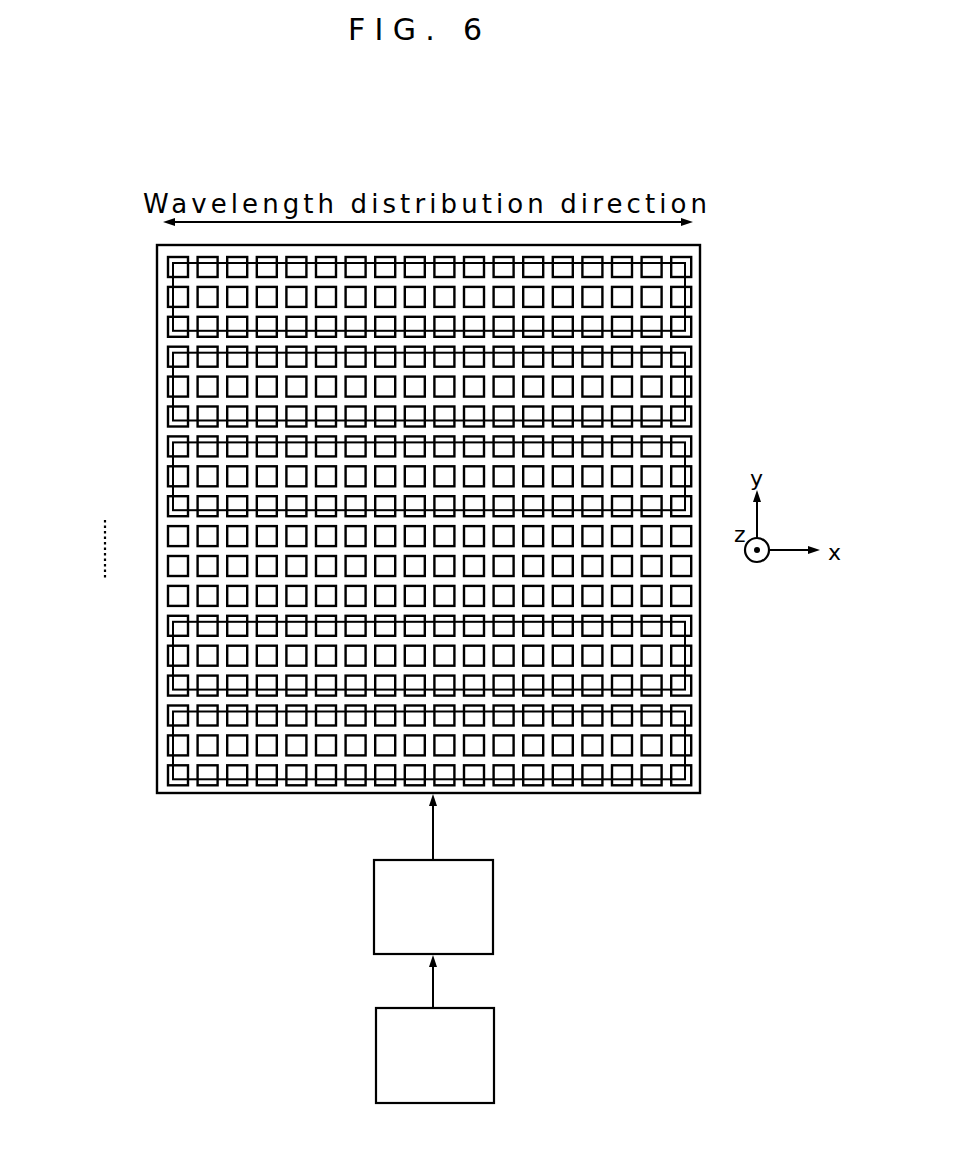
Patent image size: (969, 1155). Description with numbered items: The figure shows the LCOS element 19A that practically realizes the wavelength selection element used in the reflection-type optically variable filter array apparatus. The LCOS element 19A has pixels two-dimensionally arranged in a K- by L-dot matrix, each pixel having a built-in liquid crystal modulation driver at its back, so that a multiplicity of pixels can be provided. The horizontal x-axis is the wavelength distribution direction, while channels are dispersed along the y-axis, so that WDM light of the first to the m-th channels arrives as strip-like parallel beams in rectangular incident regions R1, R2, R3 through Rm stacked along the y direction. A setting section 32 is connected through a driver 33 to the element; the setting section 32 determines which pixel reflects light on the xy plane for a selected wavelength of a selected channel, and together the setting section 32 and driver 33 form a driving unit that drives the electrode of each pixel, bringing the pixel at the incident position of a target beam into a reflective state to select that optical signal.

The LCOS element 19A is at (702, 283).
The driver 33 is at (374, 908).
The setting section 32 is at (376, 1056).
The incident region R1 is at (173, 313).
The incident region R2 is at (173, 402).
The incident region R3 is at (173, 491).
The incident region Rm is at (173, 762).